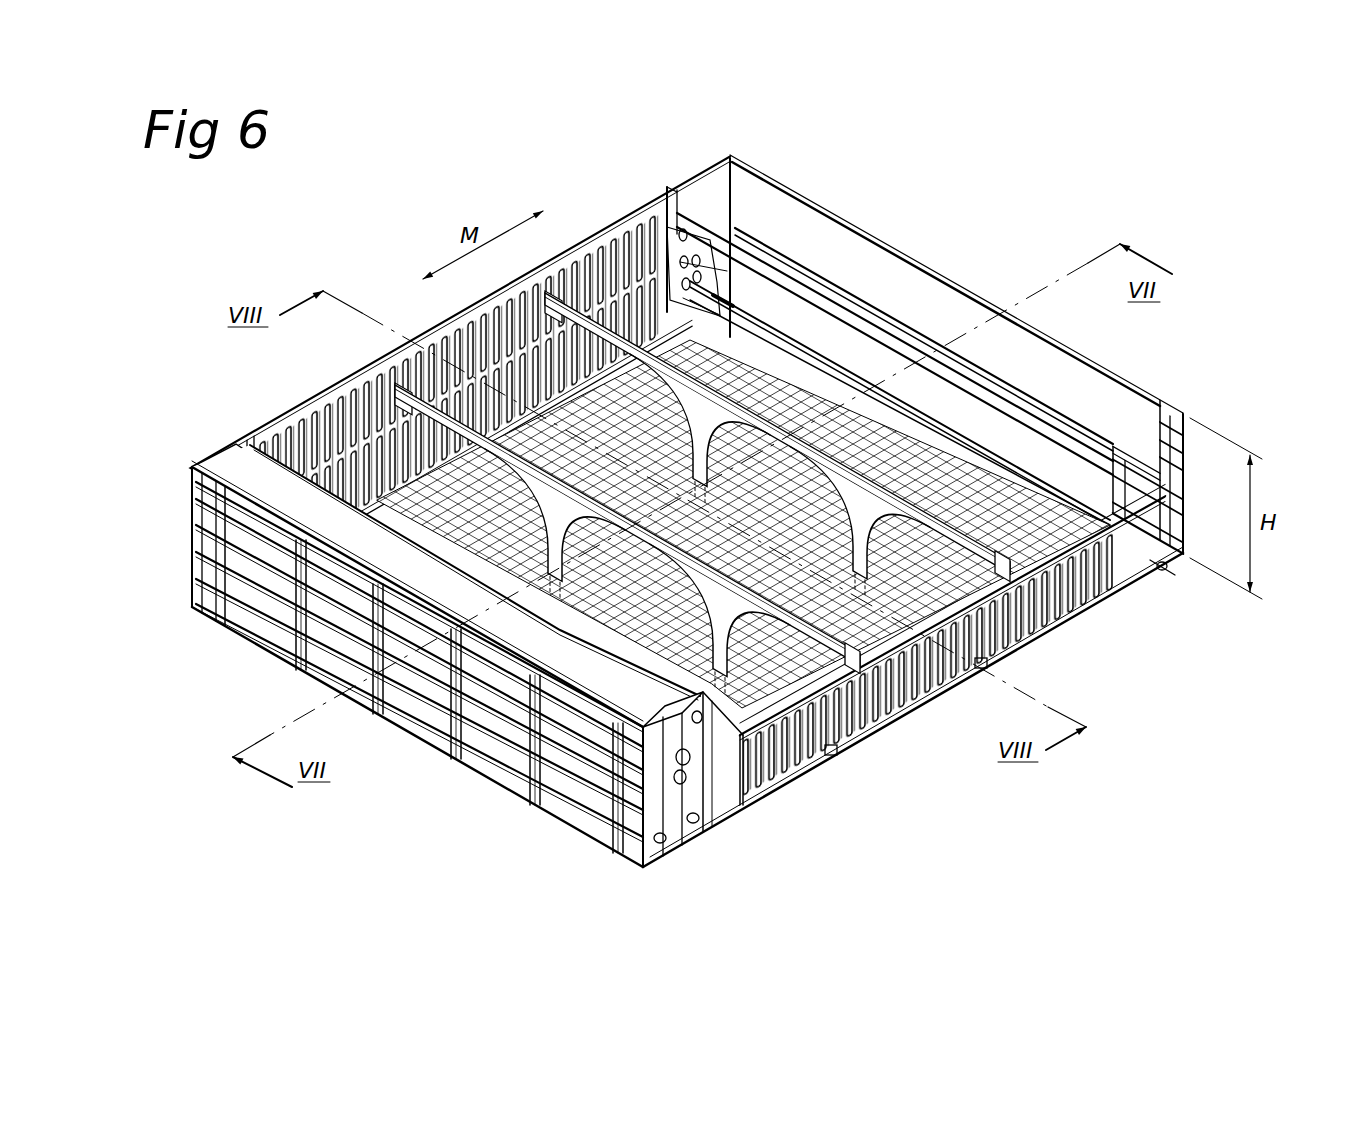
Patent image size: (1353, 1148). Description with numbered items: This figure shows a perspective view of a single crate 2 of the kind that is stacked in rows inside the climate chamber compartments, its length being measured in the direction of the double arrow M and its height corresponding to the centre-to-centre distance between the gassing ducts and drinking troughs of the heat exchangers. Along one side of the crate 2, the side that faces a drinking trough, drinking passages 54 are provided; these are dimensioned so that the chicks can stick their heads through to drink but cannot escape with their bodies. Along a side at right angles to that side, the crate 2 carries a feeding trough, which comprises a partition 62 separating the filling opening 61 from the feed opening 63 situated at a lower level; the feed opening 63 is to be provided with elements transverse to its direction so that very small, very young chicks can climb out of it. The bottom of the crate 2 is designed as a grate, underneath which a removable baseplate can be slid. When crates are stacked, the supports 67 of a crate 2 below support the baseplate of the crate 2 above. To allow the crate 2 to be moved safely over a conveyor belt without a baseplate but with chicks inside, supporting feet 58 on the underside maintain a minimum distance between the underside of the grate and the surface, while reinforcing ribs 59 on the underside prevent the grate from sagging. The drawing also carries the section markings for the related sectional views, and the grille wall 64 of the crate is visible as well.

The crate 2 is at (941, 248).
The drinking passages 54 is at (982, 660).
The supporting feet 58 is at (692, 835).
The reinforcing ribs 59 is at (838, 750).
The filling opening 61 is at (828, 253).
The partition 62 is at (664, 232).
The feed opening 63 is at (670, 247).
The grille wall 64 is at (495, 345).
The supports 67 is at (838, 636).